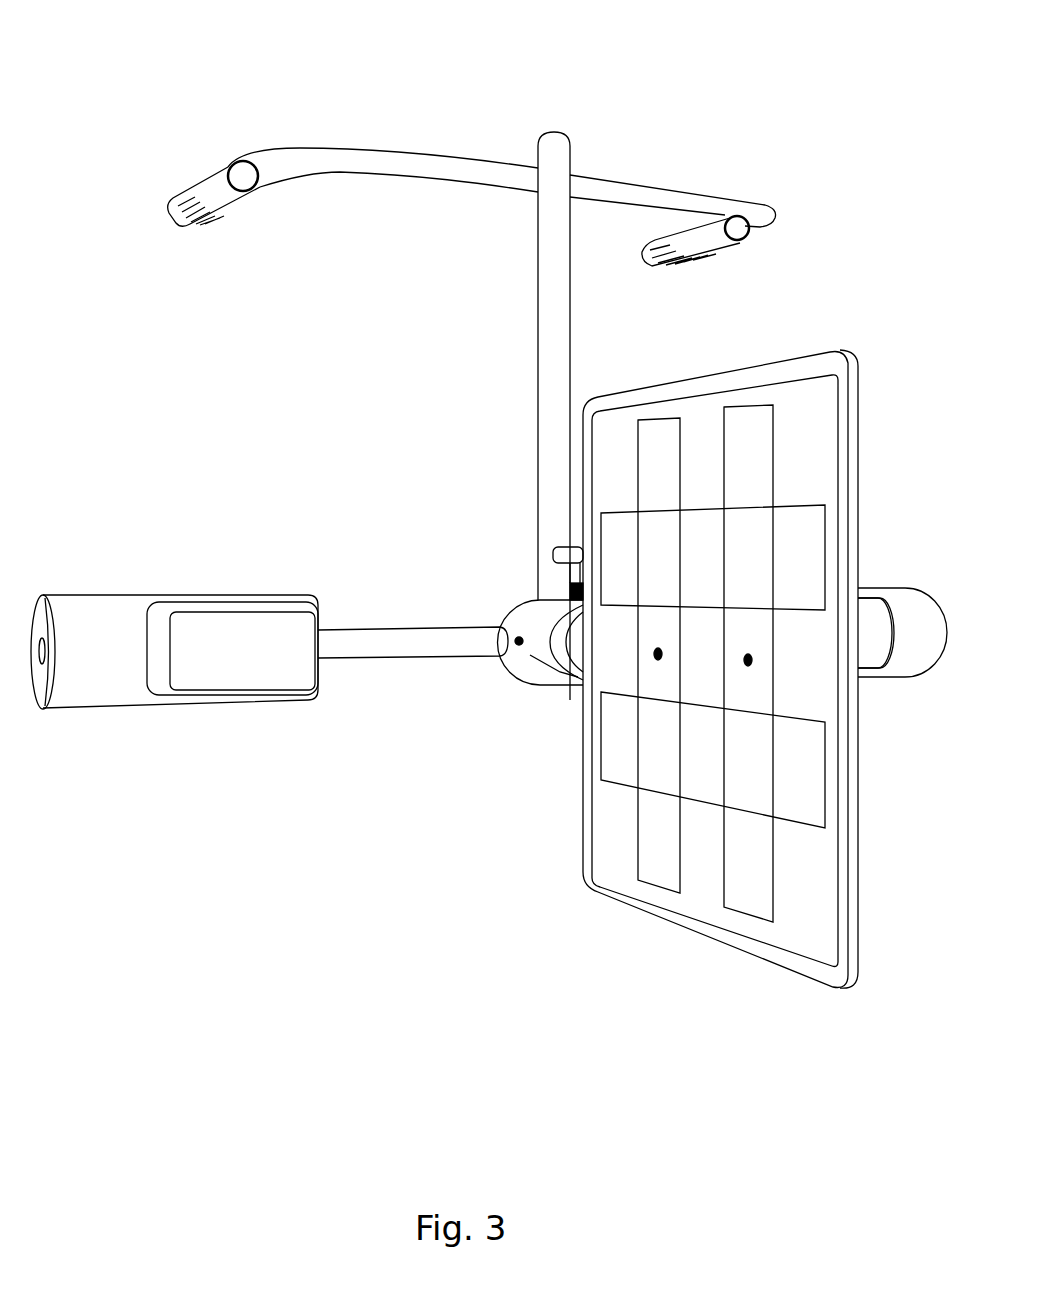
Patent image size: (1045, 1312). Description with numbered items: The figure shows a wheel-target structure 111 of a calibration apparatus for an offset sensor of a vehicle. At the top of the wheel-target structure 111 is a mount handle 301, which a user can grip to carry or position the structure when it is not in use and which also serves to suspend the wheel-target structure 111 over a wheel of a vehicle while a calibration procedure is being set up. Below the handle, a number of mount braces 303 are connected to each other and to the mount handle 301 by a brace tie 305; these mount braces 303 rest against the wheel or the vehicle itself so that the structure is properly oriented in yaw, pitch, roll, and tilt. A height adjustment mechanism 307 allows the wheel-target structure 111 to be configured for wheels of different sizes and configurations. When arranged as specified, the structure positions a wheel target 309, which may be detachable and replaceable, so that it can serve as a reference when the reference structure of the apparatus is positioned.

The wheel-target structure 111 is at (138, 77).
The mount handle 301 is at (678, 190).
The mount braces 303 is at (122, 597).
The brace tie 305 is at (376, 641).
The height adjustment mechanism 307 is at (518, 612).
The wheel target 309 is at (602, 897).